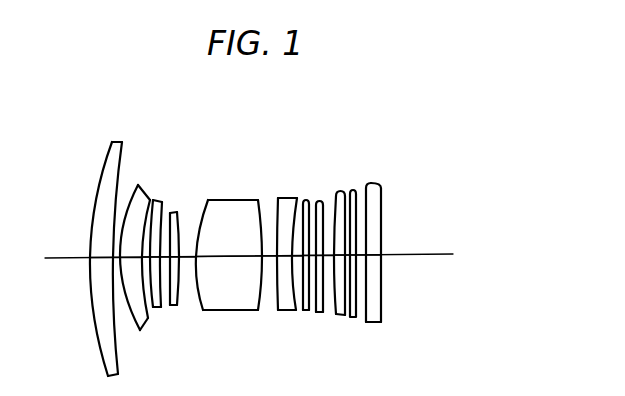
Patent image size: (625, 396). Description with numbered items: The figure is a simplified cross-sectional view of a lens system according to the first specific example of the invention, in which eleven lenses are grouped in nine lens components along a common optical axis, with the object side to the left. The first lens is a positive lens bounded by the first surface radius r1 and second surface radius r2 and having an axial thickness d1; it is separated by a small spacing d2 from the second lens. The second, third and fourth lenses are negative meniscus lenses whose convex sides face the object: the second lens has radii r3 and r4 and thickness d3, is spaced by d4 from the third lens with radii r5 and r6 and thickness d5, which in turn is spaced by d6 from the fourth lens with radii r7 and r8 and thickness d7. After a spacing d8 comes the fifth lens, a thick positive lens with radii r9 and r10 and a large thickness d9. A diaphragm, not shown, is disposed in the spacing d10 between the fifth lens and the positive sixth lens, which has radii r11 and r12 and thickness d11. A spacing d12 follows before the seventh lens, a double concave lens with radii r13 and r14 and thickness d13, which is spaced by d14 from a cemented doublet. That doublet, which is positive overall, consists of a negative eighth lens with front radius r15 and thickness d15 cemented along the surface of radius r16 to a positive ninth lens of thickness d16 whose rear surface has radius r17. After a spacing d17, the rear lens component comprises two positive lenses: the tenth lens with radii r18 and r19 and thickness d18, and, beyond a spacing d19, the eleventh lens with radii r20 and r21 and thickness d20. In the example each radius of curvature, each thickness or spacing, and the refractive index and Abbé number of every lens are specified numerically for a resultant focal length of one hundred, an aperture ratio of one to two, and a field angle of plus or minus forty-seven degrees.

The radius of curvature of the first surface r1 is at (99, 190).
The radius of curvature of the second surface r2 is at (113, 141).
The radius of curvature of the third surface r3 is at (121, 172).
The radius of curvature of the fourth surface r4 is at (146, 195).
The radius of curvature of the fifth surface r5 is at (155, 199).
The radius of curvature of the sixth surface r6 is at (164, 203).
The radius of curvature of the seventh surface r7 is at (171, 214).
The radius of curvature of the eighth surface r8 is at (181, 222).
The radius of curvature of the ninth surface r9 is at (209, 200).
The radius of curvature of the tenth surface r10 is at (258, 200).
The radius of curvature of the eleventh surface r11 is at (278, 199).
The radius of curvature of the twelfth surface r12 is at (294, 198).
The radius of curvature of the thirteenth surface r13 is at (302, 199).
The radius of curvature of the fourteenth surface r14 is at (316, 200).
The radius of curvature of the fifteenth surface r15 is at (350, 199).
The radius of curvature of the sixteenth surface r16 is at (352, 189).
The radius of curvature of the seventeenth surface r17 is at (355, 188).
The radius of curvature of the eighteenth surface r18 is at (361, 189).
The radius of curvature of the nineteenth surface r19 is at (367, 184).
The radius of curvature of the twentieth surface r20 is at (383, 193).
The radius of curvature of the twenty-first surface r21 is at (383, 213).
The thickness of the first lens d1 is at (93, 262).
The spacing between the first and second lenses d2 is at (103, 292).
The thickness of the second lens d3 is at (115, 270).
The spacing between the second and third lenses d4 is at (141, 332).
The thickness of the third lens d5 is at (153, 310).
The spacing between the third and fourth lenses d6 is at (172, 306).
The thickness of the fourth lens d7 is at (178, 306).
The spacing between the fourth and fifth lenses d8 is at (190, 292).
The thickness of the fifth lens d9 is at (225, 260).
The spacing between the fifth and sixth lenses d10 is at (268, 262).
The thickness of the sixth lens d11 is at (290, 280).
The spacing between the sixth and seventh lenses d12 is at (304, 312).
The thickness of the seventh lens d13 is at (317, 313).
The spacing between the seventh and eighth lenses d14 is at (324, 312).
The thickness of the eighth lens d15 is at (355, 312).
The thickness of the ninth lens d16 is at (360, 295).
The spacing between the ninth and tenth lenses d17 is at (378, 285).
The thickness of the tenth lens d18 is at (378, 282).
The spacing between the tenth and eleventh lenses d19 is at (383, 262).
The thickness of the eleventh lens d20 is at (383, 268).